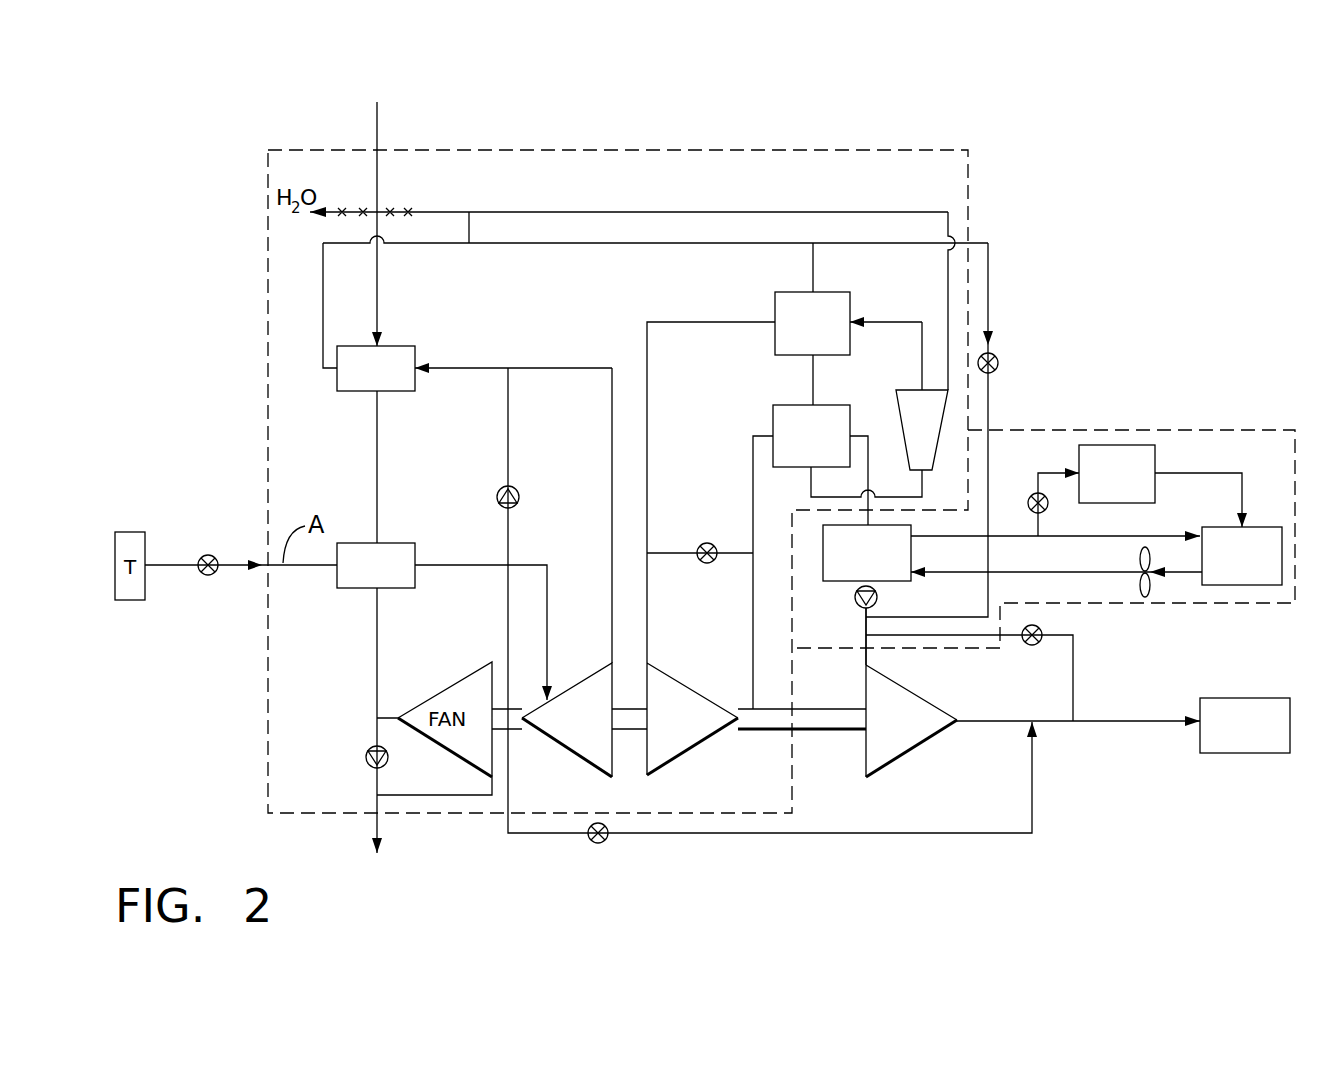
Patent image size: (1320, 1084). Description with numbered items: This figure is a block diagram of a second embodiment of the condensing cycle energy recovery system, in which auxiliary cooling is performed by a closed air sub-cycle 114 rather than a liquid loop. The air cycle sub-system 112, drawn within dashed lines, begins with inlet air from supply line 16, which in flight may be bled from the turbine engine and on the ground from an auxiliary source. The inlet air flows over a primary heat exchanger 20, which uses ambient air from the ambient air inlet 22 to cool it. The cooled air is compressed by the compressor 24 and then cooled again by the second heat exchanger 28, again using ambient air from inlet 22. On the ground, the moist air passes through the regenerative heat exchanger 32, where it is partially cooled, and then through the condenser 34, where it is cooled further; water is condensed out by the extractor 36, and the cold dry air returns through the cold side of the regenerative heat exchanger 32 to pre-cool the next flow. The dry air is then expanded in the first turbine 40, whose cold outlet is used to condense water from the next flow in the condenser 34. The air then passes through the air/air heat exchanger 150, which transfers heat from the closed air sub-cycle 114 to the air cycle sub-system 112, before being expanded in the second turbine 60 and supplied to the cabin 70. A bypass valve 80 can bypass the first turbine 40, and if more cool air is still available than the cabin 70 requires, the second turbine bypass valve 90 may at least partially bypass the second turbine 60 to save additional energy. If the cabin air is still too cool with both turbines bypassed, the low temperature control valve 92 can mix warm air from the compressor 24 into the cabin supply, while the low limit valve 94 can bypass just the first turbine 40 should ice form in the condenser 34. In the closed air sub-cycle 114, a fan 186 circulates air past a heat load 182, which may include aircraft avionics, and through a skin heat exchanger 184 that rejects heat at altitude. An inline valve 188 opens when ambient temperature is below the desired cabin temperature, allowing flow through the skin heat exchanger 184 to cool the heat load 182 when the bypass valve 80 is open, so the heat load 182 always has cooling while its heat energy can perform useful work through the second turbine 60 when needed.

The supply line 16 is at (168, 563).
The primary heat exchanger 20 is at (353, 590).
The ambient air inlet 22 is at (378, 131).
The compressor 24 is at (596, 768).
The second heat exchanger 28 is at (352, 393).
The regenerative heat exchanger 32 is at (790, 292).
The condenser 34 is at (790, 405).
The extractor 36 is at (900, 416).
The first turbine 40 is at (668, 768).
The second turbine 60 is at (888, 768).
The cabin 70 is at (1240, 698).
The bypass valve 80 is at (1000, 362).
The second turbine bypass valve 90 is at (1026, 648).
The low temperature control valve 92 is at (592, 843).
The low limit valve 94 is at (710, 543).
The air cycle sub-system 112 is at (768, 150).
The closed air sub-cycle 114 is at (1172, 430).
The air/air heat exchanger 150 is at (895, 583).
The heat load 182 is at (1238, 525).
The skin heat exchanger 184 is at (1157, 456).
The fan 186 is at (1140, 590).
The inline valve 188 is at (1048, 508).